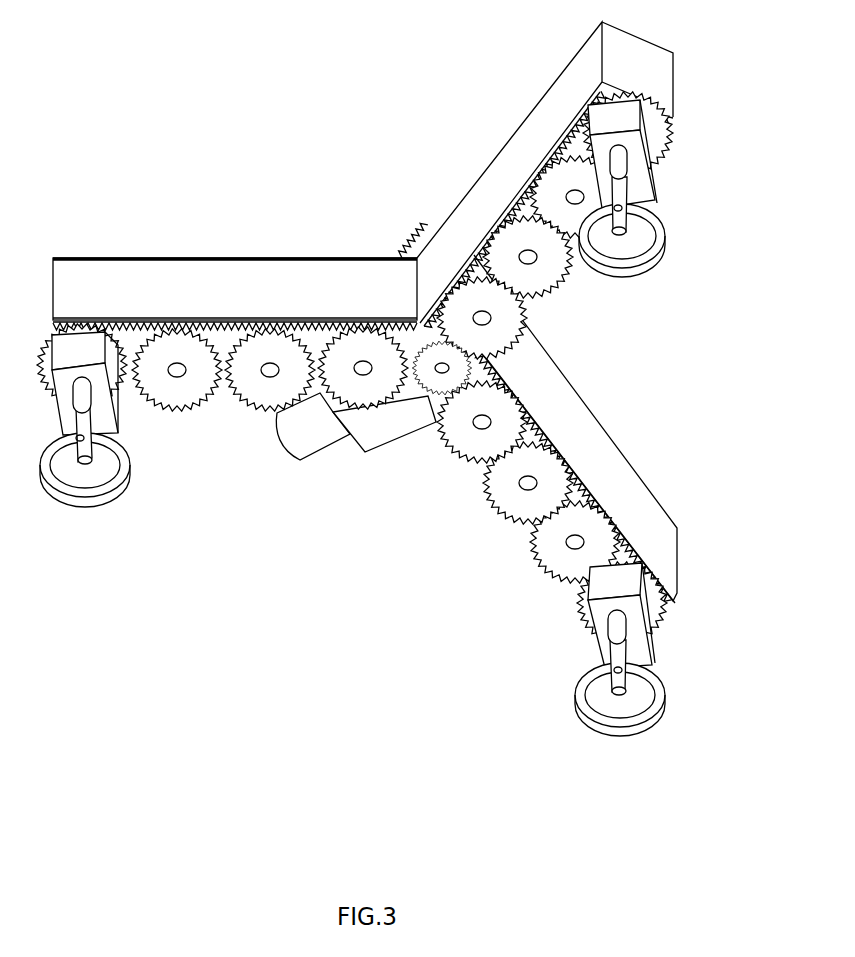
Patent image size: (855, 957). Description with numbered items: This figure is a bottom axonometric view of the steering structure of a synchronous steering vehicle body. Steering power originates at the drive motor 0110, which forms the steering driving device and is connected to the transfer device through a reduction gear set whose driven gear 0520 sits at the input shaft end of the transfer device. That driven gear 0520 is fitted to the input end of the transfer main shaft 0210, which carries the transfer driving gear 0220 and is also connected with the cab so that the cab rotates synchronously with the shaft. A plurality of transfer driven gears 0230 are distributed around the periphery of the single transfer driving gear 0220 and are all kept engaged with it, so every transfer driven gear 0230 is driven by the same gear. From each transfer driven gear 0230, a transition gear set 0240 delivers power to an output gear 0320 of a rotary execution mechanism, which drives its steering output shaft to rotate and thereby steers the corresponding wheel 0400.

The drive motor 0110 is at (298, 438).
The transfer main shaft 0210 is at (443, 368).
The transfer driving gear 0220 is at (447, 365).
The transfer driven gear 0230 is at (367, 353).
The transition gear set 0240 is at (197, 350).
The output gear 0320 is at (132, 330).
The wheel 0400 is at (100, 463).
The driven gear 0520 is at (405, 248).